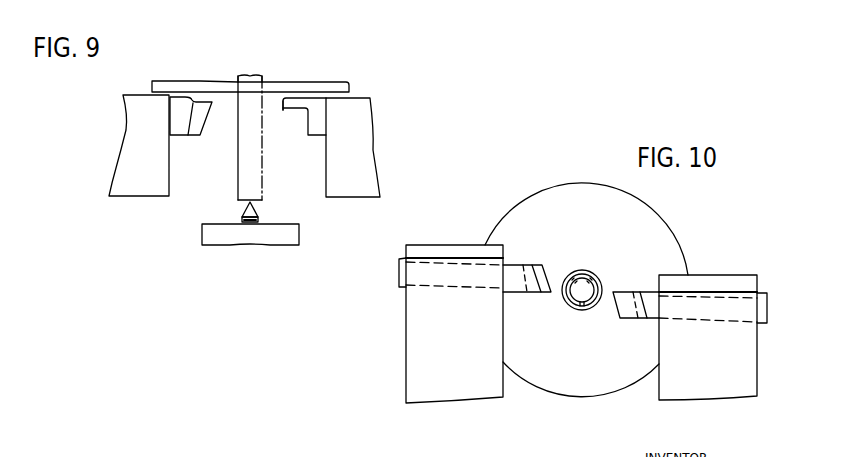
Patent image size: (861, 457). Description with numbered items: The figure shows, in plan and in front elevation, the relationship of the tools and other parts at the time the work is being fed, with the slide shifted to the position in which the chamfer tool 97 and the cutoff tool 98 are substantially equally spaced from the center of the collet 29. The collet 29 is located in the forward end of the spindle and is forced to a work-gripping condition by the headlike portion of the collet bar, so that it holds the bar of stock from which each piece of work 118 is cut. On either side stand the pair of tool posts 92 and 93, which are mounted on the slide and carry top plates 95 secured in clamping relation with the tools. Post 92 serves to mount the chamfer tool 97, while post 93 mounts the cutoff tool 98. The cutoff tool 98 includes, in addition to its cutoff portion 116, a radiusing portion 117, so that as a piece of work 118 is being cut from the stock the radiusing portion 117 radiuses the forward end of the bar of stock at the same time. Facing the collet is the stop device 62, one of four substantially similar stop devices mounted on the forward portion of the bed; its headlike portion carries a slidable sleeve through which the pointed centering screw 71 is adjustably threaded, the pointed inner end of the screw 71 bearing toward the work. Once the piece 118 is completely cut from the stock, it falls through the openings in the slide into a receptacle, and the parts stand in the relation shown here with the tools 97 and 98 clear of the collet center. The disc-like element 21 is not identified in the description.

In FIG. 9, the ratchet disc 21 is at (333, 85).
In FIG. 10, the ratchet disc 21 is at (632, 222).
In FIG. 10, the collet 29 is at (596, 275).
In FIG. 9, the stop device 62 is at (253, 250).
In FIG. 9, the screw 71 is at (257, 210).
In FIG. 9, the tool post 92 is at (130, 158).
In FIG. 10, the tool post 92 is at (425, 353).
In FIG. 9, the tool post 93 is at (357, 162).
In FIG. 10, the tool post 93 is at (683, 378).
In FIG. 10, the top plate 95 is at (448, 252).
In FIG. 9, the chamfer tool 97 is at (178, 115).
In FIG. 10, the chamfer tool 97 is at (512, 273).
In FIG. 9, the cutoff tool 98 is at (317, 118).
In FIG. 10, the cutoff tool 98 is at (760, 293).
In FIG. 9, the cutoff portion 116 is at (300, 122).
In FIG. 9, the radiusing portion 117 is at (306, 98).
In FIG. 9, the piece of work 118 is at (254, 155).